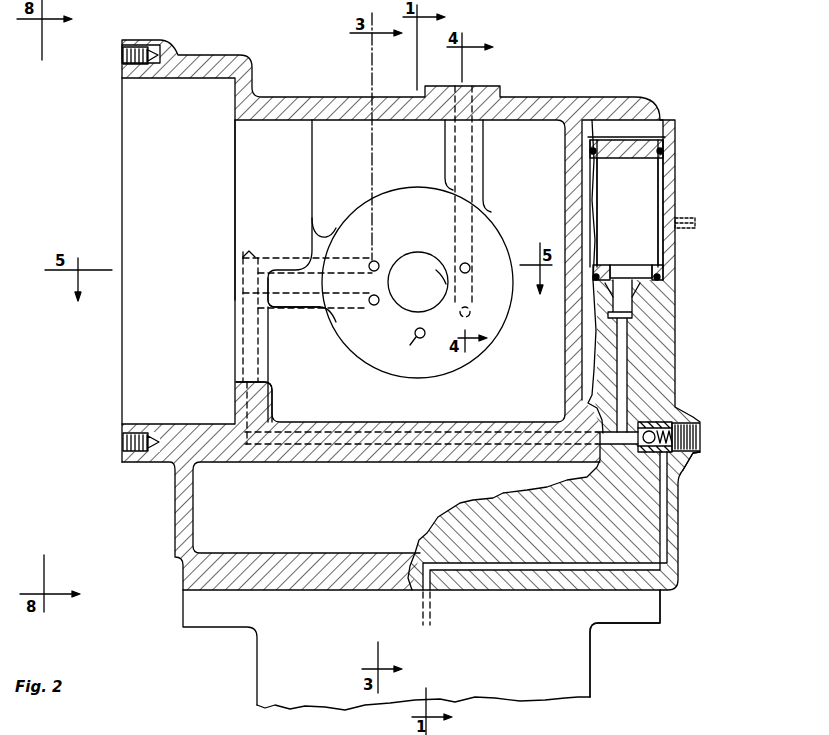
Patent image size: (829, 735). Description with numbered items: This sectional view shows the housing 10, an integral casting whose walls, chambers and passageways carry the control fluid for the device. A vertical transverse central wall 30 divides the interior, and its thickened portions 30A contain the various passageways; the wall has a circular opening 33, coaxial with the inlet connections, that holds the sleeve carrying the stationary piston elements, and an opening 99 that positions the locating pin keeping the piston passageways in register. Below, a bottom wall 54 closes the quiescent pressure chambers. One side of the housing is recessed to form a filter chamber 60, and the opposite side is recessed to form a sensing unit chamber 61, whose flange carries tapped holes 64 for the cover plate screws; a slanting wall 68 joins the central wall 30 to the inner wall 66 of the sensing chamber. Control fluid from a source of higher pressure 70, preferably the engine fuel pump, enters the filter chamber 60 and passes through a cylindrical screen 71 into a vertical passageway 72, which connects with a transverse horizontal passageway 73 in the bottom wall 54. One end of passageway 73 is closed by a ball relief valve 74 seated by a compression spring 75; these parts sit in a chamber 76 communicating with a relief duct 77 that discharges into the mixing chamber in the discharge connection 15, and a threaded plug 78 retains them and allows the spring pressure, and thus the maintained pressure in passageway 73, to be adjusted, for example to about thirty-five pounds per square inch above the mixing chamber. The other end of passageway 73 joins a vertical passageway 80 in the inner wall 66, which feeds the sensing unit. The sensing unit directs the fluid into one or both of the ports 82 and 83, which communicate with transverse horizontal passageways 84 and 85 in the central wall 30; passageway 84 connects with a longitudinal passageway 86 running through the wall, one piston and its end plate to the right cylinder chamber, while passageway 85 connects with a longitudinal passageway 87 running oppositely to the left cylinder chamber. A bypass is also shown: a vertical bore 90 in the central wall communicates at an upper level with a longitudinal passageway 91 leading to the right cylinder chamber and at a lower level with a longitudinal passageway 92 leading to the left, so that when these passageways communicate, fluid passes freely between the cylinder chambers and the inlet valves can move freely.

The housing 10 is at (197, 56).
The discharge connection 15 is at (586, 668).
The vertical transverse central wall 30 is at (532, 389).
The thickened portions of central wall 30A is at (397, 196).
The circular opening 33 is at (418, 282).
The bottom wall 54 is at (357, 458).
The filter chamber 60 is at (667, 170).
The sensing unit chamber 61 is at (194, 117).
The tapped holes 64 is at (122, 55).
The inner wall of sensing unit chamber 66 is at (240, 395).
The slanting wall 68 is at (246, 170).
The source of higher fluid pressure 70 is at (697, 222).
The cylindrical screen 71 is at (660, 197).
The vertical passageway 72 is at (625, 348).
The transverse horizontal passageway 73 is at (422, 462).
The ball relief valve 74 is at (652, 430).
The compression spring 75 is at (668, 428).
The chamber 76 is at (690, 456).
The relief duct 77 is at (660, 566).
The threaded plug 78 is at (702, 440).
The vertical passageway 80 is at (248, 348).
The port 82 is at (243, 298).
The port 83 is at (243, 258).
The transverse horizontal passageway 84 is at (293, 300).
The transverse horizontal passageway 85 is at (268, 262).
The longitudinal passageway 86 is at (378, 305).
The longitudinal passageway 87 is at (380, 261).
The vertical bore 90 is at (474, 228).
The longitudinal passageway 91 is at (471, 266).
The longitudinal passageway 92 is at (472, 314).
The opening 99 is at (409, 342).